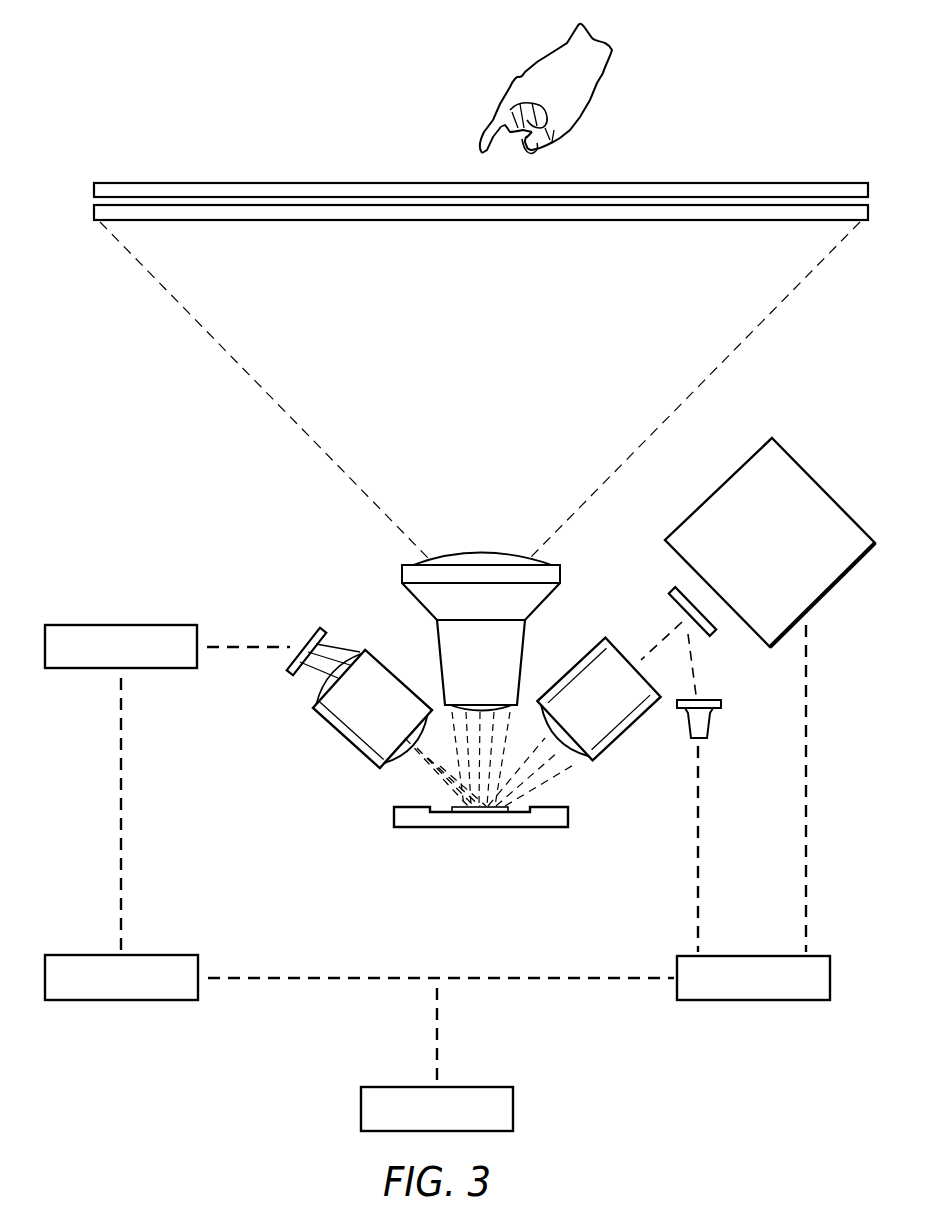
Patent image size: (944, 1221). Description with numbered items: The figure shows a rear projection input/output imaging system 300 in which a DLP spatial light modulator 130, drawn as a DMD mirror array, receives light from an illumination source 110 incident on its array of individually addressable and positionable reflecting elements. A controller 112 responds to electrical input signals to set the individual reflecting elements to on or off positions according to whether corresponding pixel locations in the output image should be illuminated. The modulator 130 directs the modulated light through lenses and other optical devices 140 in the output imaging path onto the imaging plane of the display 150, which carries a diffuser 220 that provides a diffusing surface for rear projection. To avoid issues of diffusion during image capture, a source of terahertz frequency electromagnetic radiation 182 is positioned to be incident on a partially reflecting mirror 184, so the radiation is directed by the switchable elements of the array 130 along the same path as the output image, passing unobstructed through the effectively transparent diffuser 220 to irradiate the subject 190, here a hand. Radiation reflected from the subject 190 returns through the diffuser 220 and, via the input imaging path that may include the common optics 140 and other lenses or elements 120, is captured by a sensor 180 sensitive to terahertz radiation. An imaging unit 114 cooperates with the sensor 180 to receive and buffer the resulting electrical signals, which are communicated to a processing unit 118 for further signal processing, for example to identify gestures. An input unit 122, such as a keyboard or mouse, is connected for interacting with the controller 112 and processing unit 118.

The interactive projection system 300 is at (316, 129).
The image capture subject 190 is at (537, 62).
The display 150 is at (93, 190).
The diffuser 220 is at (93, 212).
The lenses and other optical devices 140 is at (402, 574).
The imaging unit 114 is at (110, 624).
The sensor element 180 is at (290, 670).
The other lenses or elements 120 is at (355, 746).
The spatial light modulator 130 is at (480, 828).
The partially reflecting mirror 184 is at (672, 591).
The source of terahertz frequency electromagnetic radiation 182 is at (712, 730).
The illumination source 110 is at (822, 488).
The processing unit 118 is at (110, 1000).
The controller 112 is at (765, 1000).
The input unit 122 is at (361, 1108).